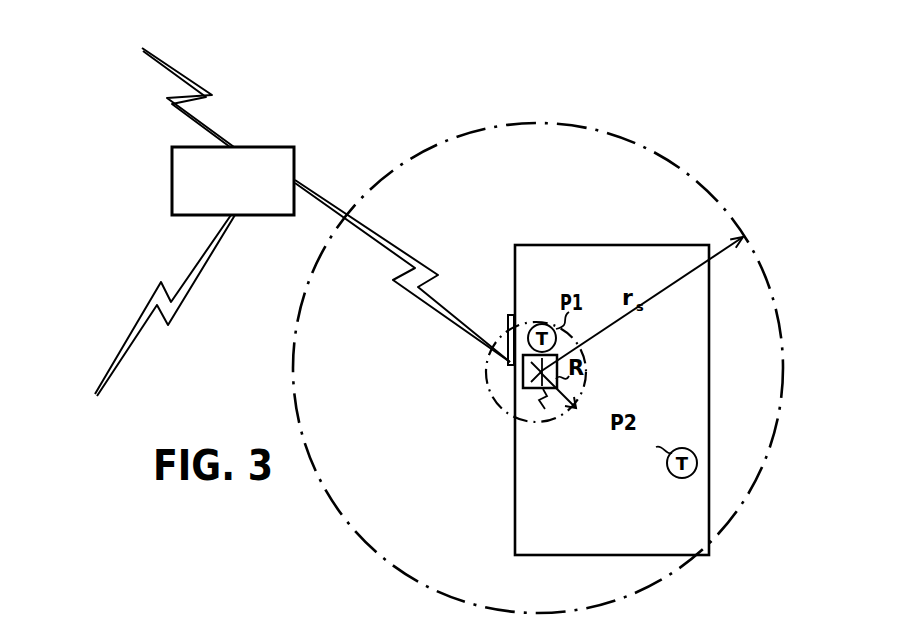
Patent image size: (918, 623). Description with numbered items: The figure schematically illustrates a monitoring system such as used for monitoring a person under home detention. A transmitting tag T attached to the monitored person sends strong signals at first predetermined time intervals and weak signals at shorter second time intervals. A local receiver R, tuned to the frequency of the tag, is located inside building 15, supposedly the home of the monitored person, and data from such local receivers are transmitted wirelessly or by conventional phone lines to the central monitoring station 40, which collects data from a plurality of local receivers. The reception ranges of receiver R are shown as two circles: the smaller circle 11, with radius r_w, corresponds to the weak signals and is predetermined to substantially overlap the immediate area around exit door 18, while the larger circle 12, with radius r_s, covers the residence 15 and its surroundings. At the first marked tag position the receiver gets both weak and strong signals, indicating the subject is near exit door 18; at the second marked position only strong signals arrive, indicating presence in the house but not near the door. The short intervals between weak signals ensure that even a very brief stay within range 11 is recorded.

The central monitoring station 40 is at (294, 158).
The circle of strong-signal reception range 12 is at (669, 205).
The building 15 is at (477, 498).
The exit door 18 is at (509, 328).
The circle of weak-signal reception range 11 is at (515, 410).